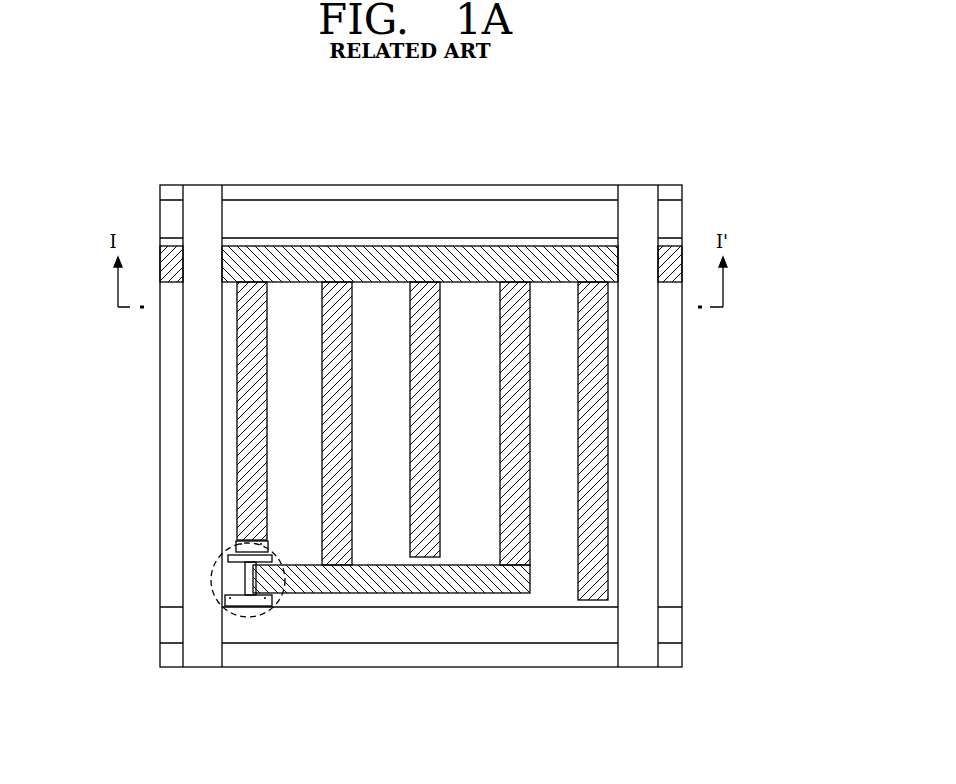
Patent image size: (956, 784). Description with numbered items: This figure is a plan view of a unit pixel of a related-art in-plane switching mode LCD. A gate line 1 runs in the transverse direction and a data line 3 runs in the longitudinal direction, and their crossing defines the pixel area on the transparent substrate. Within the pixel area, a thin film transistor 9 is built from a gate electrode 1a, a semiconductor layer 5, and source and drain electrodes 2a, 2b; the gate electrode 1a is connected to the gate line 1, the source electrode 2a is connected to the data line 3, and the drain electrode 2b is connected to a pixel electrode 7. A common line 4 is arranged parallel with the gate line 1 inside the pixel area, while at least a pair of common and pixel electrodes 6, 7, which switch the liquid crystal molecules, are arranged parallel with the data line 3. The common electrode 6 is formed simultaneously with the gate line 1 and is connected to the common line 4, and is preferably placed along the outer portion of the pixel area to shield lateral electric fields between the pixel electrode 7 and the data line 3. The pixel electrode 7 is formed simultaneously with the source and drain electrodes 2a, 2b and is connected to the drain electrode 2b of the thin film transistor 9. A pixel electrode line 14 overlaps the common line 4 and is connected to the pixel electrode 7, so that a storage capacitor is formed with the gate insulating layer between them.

The gate line 1 is at (498, 628).
The gate electrode 1a is at (240, 541).
The source electrode 2a is at (228, 572).
The drain electrode 2b is at (272, 606).
The data line 3 is at (200, 652).
The common line 4 is at (175, 247).
The semiconductor layer 5 is at (250, 596).
The common electrode 6 is at (252, 305).
The pixel electrode 7 is at (338, 305).
The thin film transistor 9 is at (212, 602).
The pixel electrode line 14 is at (560, 265).